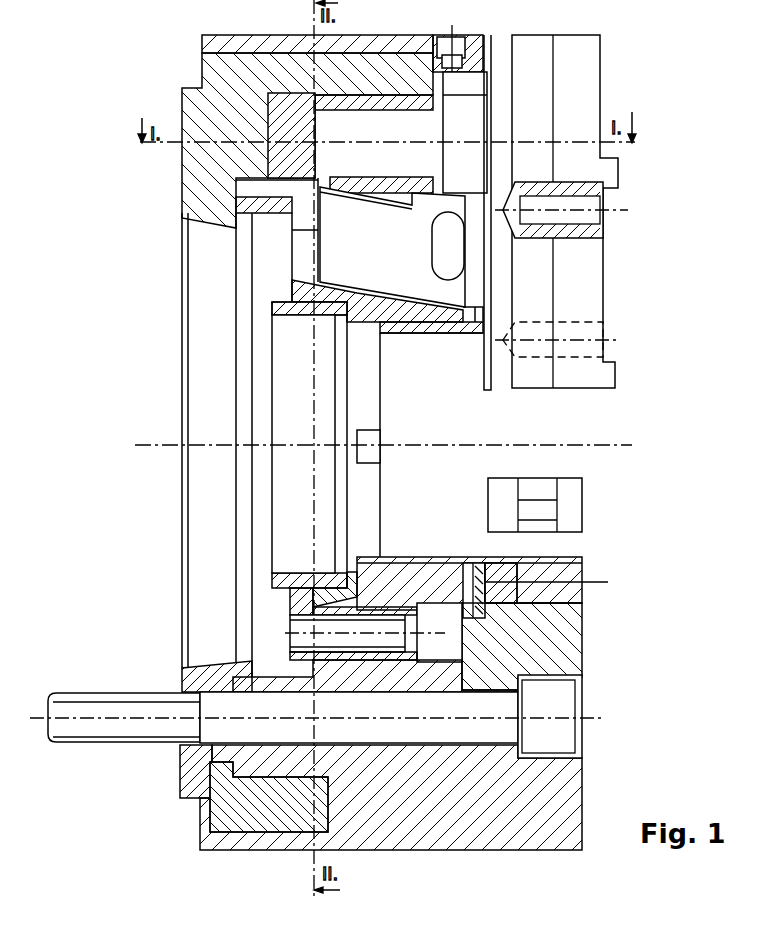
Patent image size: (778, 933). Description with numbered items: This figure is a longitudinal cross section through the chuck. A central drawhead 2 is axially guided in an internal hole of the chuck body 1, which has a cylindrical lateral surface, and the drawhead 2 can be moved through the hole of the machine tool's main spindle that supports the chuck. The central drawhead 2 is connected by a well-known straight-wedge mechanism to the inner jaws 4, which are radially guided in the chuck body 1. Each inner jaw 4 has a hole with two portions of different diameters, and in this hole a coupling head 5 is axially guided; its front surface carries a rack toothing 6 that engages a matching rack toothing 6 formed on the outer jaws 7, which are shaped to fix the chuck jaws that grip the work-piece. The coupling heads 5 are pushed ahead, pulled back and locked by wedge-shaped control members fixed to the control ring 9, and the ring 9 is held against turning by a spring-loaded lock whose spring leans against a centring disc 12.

The chuck body 1 is at (427, 807).
The central drawhead 2 is at (410, 585).
The inner jaws 4 is at (340, 236).
The coupling head 5 is at (353, 122).
The rack toothing 6 is at (490, 60).
The outer jaws 7 is at (537, 292).
The control ring 9 is at (257, 808).
The centring disc 12 is at (181, 763).